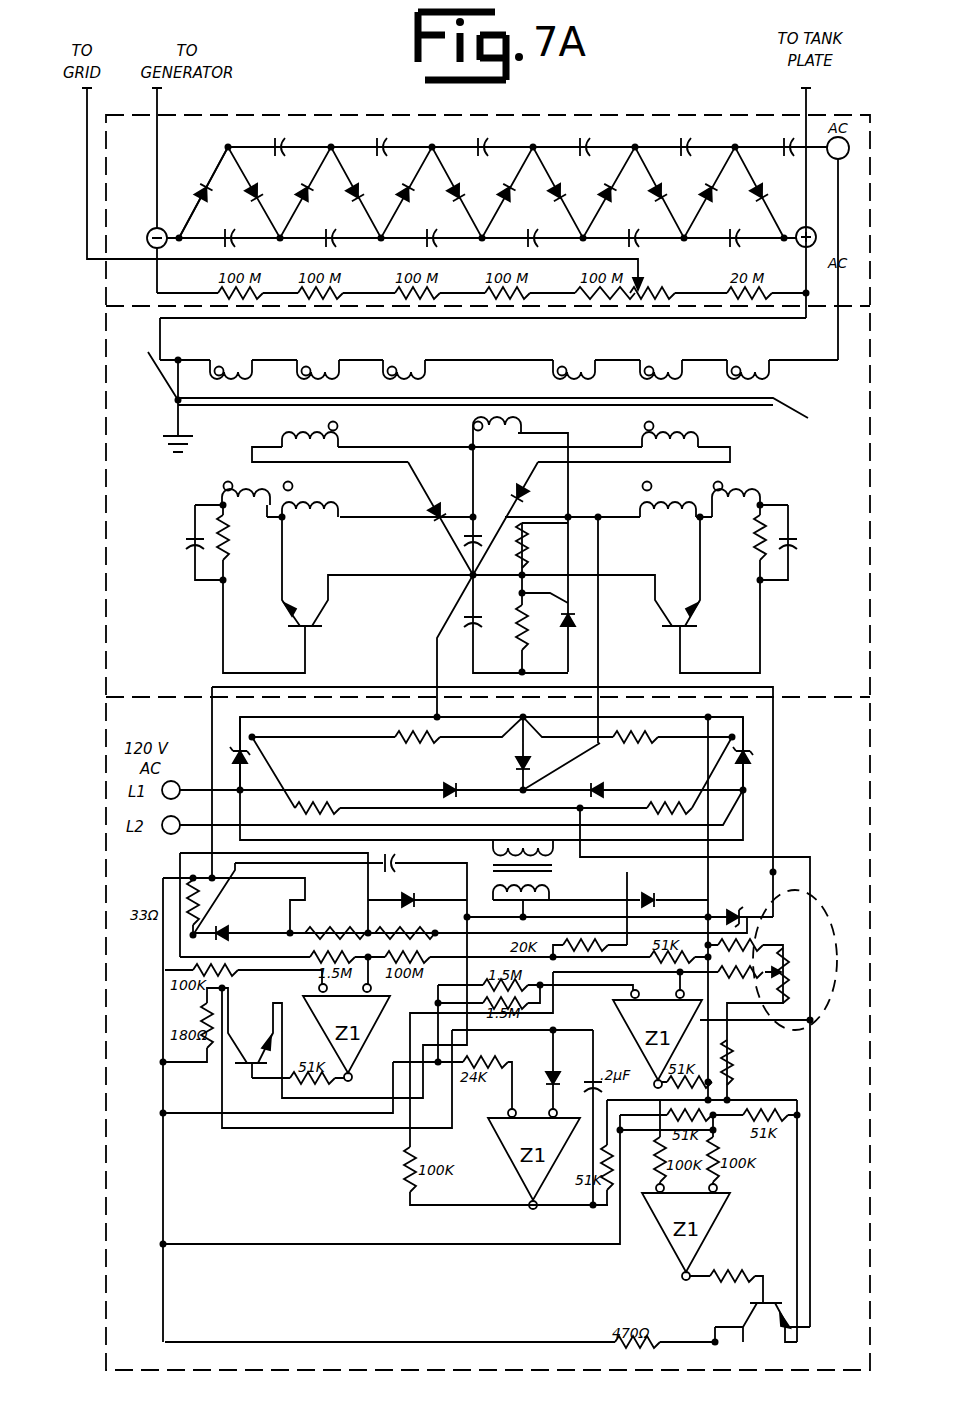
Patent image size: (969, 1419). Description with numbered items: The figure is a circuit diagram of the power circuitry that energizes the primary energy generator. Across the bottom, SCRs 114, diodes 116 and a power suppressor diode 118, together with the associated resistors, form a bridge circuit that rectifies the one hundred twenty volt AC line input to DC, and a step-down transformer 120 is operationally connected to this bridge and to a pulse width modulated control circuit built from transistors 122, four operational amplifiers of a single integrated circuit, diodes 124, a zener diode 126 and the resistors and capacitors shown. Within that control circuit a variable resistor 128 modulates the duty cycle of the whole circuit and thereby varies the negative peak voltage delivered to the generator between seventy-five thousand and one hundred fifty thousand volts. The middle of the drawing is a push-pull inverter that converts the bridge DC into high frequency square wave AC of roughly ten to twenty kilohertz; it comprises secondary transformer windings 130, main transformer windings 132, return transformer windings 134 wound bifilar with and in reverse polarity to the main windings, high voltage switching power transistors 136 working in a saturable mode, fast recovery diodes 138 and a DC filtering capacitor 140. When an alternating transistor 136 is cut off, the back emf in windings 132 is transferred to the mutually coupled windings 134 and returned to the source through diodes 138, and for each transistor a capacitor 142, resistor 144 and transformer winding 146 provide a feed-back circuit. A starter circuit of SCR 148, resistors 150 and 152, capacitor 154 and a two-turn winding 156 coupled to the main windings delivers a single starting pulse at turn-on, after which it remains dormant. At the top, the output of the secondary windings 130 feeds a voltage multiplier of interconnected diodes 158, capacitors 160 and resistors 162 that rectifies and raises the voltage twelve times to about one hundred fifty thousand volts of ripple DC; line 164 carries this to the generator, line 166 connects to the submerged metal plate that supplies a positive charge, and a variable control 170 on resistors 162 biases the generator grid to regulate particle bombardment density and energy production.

The SCR 114 is at (260, 758).
The diode 116 is at (452, 786).
The power suppressor diode 118 is at (518, 764).
The step-down transformer 120 is at (566, 882).
The transistor 122 is at (250, 1068).
The diode 124 is at (232, 928).
The zener diode 126 is at (780, 904).
The variable resistor 128 is at (810, 918).
The secondary transformer windings 130 is at (538, 357).
The main transformer windings 132 is at (342, 488).
The return transformer windings 134 is at (342, 430).
The high voltage switching power transistor 136 is at (334, 620).
The diode 138 is at (430, 490).
The DC filtering capacitor 140 is at (464, 540).
The capacitor 142 is at (185, 540).
The resistor 144 is at (226, 572).
The transformer winding 146 is at (218, 485).
The SCR 148 is at (575, 626).
The resistor 150 is at (518, 640).
The resistor 152 is at (527, 562).
The capacitor 154 is at (472, 632).
The transformer winding 156 is at (520, 426).
The diode 158 is at (500, 195).
The capacitor 160 is at (492, 142).
The resistor 162 is at (668, 291).
The line 164 is at (166, 138).
The line 166 is at (803, 95).
The variable resistance or control 170 is at (643, 278).